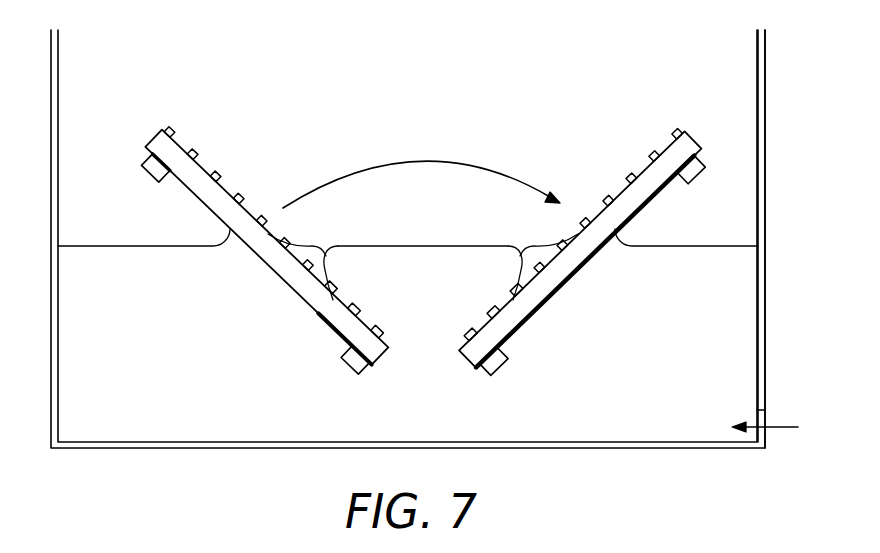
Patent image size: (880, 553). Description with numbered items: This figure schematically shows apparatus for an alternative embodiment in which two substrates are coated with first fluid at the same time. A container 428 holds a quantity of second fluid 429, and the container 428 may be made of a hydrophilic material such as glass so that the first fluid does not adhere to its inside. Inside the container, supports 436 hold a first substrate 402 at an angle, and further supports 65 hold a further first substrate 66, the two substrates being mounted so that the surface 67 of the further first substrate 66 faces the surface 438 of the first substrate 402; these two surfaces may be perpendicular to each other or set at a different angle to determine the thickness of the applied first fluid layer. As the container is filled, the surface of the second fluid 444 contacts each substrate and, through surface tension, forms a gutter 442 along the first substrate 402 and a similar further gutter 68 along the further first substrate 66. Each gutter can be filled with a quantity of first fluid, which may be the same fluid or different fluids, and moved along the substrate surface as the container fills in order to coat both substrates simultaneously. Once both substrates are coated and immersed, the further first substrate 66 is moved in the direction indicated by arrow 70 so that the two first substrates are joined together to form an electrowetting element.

The further supports 65 is at (149, 179).
The further first substrate 66 is at (270, 268).
The surface of the further first substrate 67 is at (202, 172).
The further gutter 68 is at (328, 267).
The arrow 70 is at (421, 163).
The first substrate 402 is at (584, 264).
The supports 436 is at (700, 186).
The surface of the first substrate 438 is at (673, 146).
The gutter 442 is at (522, 267).
The second fluid 444 is at (541, 257).
The container 428 is at (765, 130).
The second fluid 429 is at (735, 351).